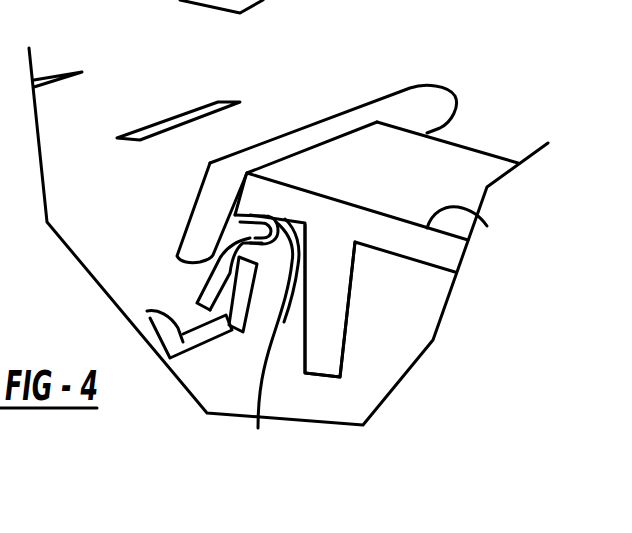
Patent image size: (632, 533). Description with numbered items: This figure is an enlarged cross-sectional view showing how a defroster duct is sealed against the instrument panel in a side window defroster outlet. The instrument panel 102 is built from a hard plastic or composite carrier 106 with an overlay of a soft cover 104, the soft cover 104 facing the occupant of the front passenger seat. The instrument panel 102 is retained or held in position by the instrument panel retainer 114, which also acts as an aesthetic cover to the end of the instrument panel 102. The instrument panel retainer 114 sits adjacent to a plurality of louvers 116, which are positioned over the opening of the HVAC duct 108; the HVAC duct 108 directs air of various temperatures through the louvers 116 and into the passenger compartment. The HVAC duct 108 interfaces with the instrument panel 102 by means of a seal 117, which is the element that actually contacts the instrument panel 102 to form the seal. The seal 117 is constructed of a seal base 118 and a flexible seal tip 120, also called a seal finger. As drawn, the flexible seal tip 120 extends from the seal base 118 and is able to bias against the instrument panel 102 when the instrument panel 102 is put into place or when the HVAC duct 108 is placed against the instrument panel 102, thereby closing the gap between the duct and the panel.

The instrument panel 102 is at (487, 153).
The soft cover 104 is at (487, 226).
The carrier 106 is at (417, 262).
The HVAC duct 108 is at (147, 311).
The instrument panel retainer 114 is at (435, 84).
The louvers 116 is at (82, 72).
The seal 117 is at (240, 348).
The seal base 118 is at (207, 285).
The flexible seal tip 120 is at (271, 338).